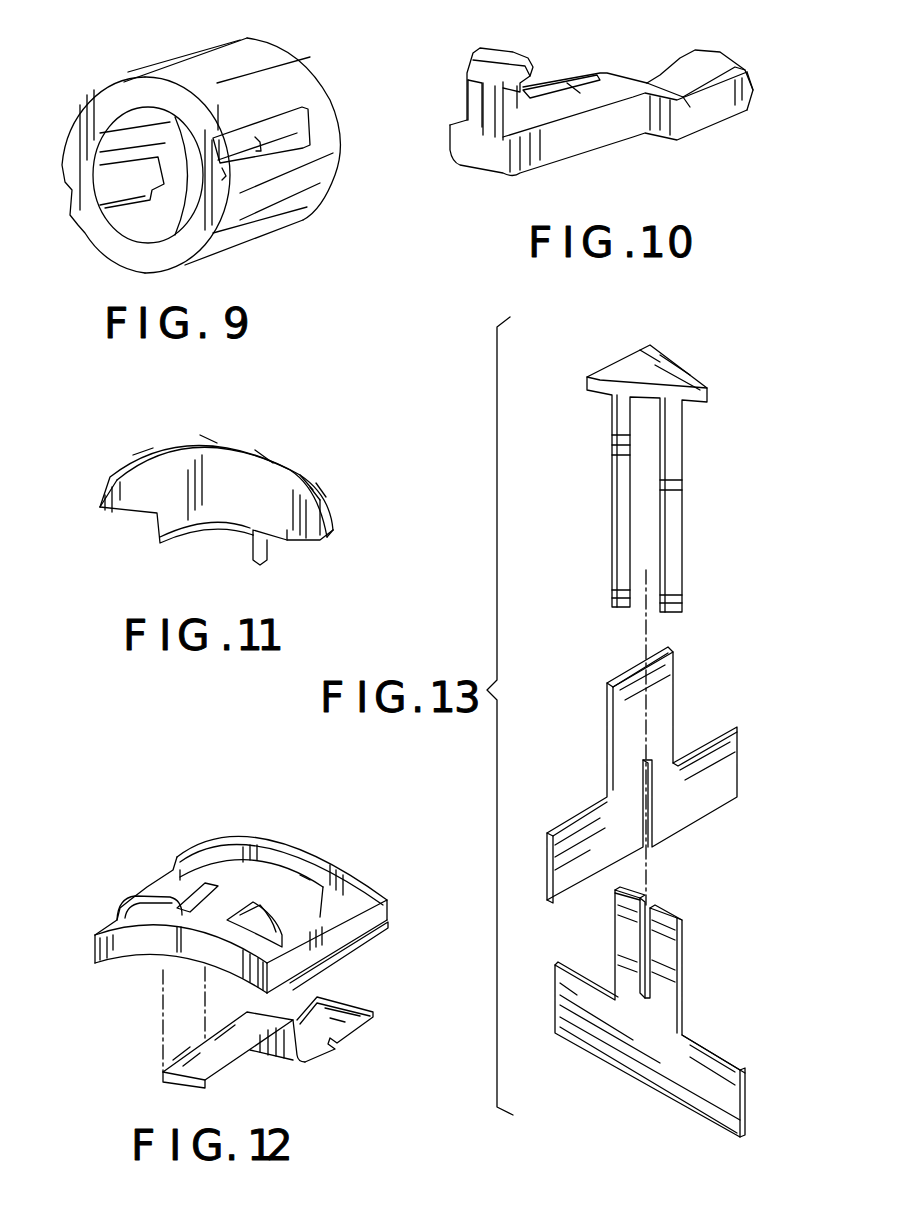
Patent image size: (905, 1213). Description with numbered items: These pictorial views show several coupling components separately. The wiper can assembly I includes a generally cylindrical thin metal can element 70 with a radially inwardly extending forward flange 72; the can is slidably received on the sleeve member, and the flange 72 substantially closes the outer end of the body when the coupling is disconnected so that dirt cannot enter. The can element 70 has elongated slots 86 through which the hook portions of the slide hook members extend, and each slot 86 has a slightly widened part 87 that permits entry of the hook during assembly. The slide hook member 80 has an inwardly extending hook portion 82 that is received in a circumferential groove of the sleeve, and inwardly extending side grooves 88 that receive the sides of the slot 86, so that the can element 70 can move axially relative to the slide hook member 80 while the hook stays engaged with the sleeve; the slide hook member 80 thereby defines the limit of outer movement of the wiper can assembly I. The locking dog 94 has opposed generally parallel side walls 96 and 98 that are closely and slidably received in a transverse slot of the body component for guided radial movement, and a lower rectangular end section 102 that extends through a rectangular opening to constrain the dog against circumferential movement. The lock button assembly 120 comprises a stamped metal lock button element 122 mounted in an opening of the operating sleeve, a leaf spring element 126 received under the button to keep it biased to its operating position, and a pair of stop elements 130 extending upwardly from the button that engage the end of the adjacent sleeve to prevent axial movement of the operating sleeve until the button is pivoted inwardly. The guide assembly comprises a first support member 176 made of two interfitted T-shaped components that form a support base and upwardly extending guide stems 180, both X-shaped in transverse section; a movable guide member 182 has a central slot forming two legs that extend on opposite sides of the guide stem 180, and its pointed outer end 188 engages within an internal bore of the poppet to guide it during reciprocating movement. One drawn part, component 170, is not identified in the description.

In FIG. 9, the wiper can assembly I is at (300, 50).
In FIG. 9, the can element 70 is at (245, 222).
In FIG. 9, the forward flange 72 is at (100, 235).
In FIG. 9, the elongated slot 86 is at (123, 183).
In FIG. 9, the widened part 87 is at (312, 136).
In FIG. 10, the slide hook member 80 is at (645, 115).
In FIG. 10, the hook portion 82 is at (503, 53).
In FIG. 10, the side groove 88 is at (466, 95).
In FIG. 11, the locking dog 94 is at (231, 445).
In FIG. 11, the side wall 96 is at (290, 530).
In FIG. 11, the side wall 98 is at (325, 493).
In FIG. 11, the lower rectangular end section 102 is at (252, 545).
In FIG. 12, the lock button assembly 120 is at (165, 862).
In FIG. 12, the lock button element 122 is at (232, 893).
In FIG. 12, the leaf spring element 126 is at (222, 1074).
In FIG. 12, the stop element 130 is at (140, 893).
In FIG. 13, the upper cross member 170 is at (685, 732).
In FIG. 13, the first support member 176 is at (688, 1028).
In FIG. 13, the guide stem 180 is at (675, 657).
In FIG. 13, the movable guide member 182 is at (685, 537).
In FIG. 13, the pointed outer end 188 is at (680, 370).